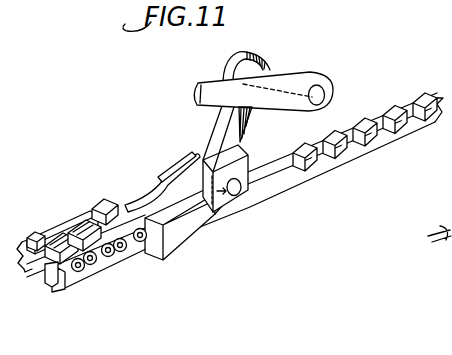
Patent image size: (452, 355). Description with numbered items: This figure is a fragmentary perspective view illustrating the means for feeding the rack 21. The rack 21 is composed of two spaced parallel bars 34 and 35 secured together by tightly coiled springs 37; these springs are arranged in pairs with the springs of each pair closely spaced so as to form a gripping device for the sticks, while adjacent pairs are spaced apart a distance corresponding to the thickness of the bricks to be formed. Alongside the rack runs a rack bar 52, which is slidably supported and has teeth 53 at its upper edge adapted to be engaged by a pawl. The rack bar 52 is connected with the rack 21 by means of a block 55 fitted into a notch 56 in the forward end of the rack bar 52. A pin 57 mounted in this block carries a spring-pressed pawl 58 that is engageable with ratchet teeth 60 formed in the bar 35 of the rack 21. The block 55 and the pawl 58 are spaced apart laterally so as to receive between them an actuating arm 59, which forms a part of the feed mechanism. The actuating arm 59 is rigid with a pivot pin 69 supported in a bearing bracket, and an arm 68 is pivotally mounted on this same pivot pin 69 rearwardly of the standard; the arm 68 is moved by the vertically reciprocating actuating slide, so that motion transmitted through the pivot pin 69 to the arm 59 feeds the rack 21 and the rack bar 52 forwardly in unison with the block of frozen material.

The rack 21 is at (67, 210).
The bar 34 is at (20, 272).
The bar 35 is at (66, 283).
The tightly coiled springs 37 is at (36, 234).
The rack bar 52 is at (328, 168).
The teeth 53 is at (354, 127).
The block 55 is at (230, 203).
The notch 56 is at (214, 214).
The pin 57 is at (241, 190).
The spring-pressed pawl 58 is at (158, 184).
The actuating arm 59 is at (214, 133).
The ratchet teeth 60 is at (100, 212).
The arm 68 is at (265, 106).
The pivot pin 69 is at (269, 72).